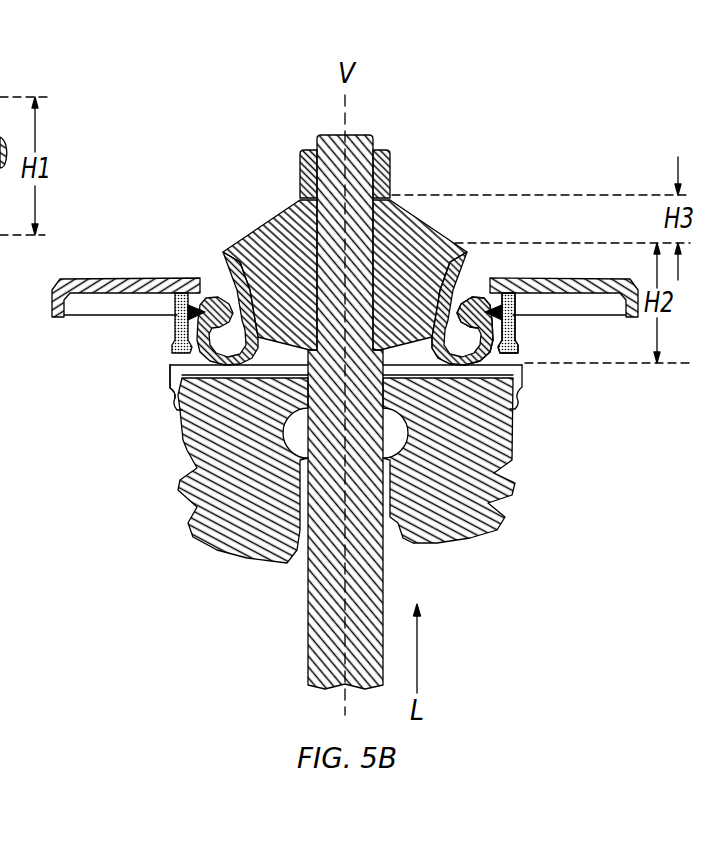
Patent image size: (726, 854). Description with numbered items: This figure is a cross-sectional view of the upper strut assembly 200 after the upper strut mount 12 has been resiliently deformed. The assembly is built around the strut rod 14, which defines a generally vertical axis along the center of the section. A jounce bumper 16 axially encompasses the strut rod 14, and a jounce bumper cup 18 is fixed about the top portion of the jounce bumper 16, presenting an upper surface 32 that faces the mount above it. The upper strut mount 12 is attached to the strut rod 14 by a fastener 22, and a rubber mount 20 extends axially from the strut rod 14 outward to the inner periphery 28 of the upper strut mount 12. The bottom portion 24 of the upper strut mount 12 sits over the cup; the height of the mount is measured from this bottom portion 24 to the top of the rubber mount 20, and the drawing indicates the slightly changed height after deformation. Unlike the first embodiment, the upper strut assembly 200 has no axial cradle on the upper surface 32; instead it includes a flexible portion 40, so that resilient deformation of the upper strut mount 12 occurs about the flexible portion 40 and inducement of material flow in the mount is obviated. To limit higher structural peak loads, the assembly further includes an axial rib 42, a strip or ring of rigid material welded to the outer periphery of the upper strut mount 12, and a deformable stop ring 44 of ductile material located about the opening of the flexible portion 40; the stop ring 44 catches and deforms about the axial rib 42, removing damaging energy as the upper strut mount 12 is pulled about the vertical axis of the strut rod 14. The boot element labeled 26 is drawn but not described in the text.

The upper strut assembly 200 is at (269, 110).
The upper strut mount 12 is at (63, 289).
The strut rod 14 is at (325, 617).
The jounce bumper 16 is at (223, 437).
The jounce bumper cup 18 is at (169, 383).
The rubber mount 20 is at (260, 226).
The fastener 22 is at (380, 150).
The bottom portion 24 is at (458, 362).
The boot 26 is at (455, 248).
The inner periphery 28 is at (413, 258).
The upper surface 32 is at (170, 358).
The flexible portion 40 is at (460, 290).
The axial rib 42 is at (498, 340).
The deformable stop ring 44 is at (512, 323).